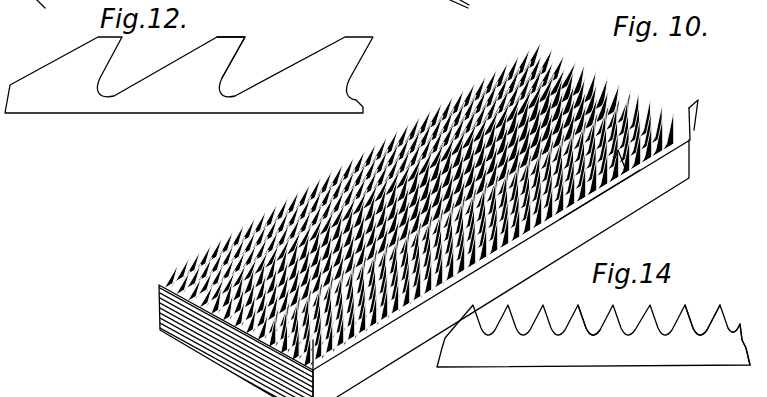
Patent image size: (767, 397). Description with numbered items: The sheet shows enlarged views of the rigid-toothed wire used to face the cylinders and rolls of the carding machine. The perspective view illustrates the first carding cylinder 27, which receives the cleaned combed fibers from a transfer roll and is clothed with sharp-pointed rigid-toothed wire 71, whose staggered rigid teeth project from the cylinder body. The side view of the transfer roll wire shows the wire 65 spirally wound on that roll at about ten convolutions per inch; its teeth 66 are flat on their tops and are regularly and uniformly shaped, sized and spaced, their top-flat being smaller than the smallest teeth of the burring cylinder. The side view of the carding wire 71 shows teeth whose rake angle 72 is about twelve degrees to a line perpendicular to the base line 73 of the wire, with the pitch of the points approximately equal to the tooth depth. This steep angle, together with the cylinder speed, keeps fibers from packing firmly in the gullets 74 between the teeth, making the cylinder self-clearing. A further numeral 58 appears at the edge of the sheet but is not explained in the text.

In FIG. 10, the first carding cylinder 27 is at (690, 180).
In FIG. 12, the blade element 58 is at (246, 0).
In FIG. 12, the wire 65 is at (153, 114).
In FIG. 12, the teeth 66 is at (221, 57).
In FIG. 14, the sharp-pointed rigid-toothed wire 71 is at (612, 357).
In FIG. 10, the rake angle 72 is at (672, 144).
In FIG. 14, the rake angle 72 is at (694, 308).
In FIG. 10, the base line 73 is at (597, 192).
In FIG. 14, the base line 73 is at (678, 367).
In FIG. 10, the gullets 74 is at (612, 166).
In FIG. 14, the gullets 74 is at (586, 322).